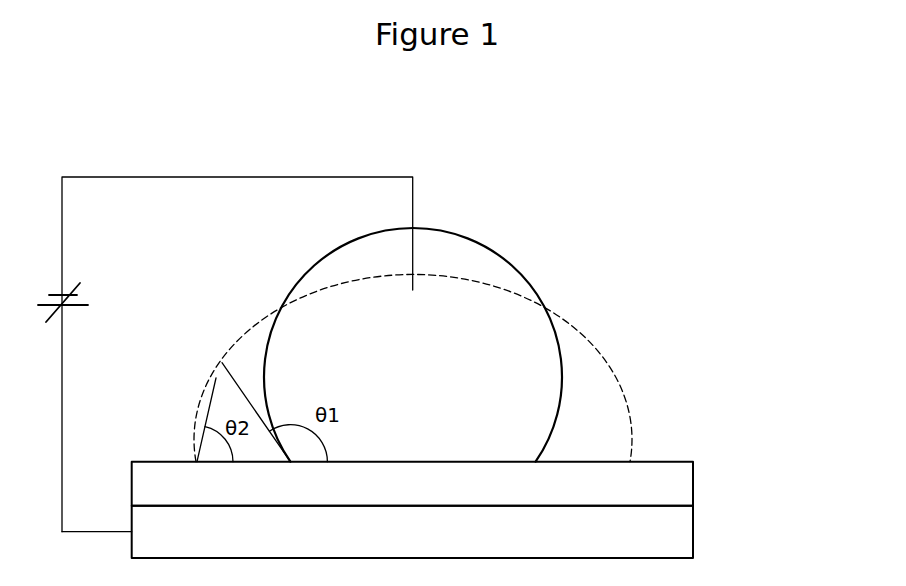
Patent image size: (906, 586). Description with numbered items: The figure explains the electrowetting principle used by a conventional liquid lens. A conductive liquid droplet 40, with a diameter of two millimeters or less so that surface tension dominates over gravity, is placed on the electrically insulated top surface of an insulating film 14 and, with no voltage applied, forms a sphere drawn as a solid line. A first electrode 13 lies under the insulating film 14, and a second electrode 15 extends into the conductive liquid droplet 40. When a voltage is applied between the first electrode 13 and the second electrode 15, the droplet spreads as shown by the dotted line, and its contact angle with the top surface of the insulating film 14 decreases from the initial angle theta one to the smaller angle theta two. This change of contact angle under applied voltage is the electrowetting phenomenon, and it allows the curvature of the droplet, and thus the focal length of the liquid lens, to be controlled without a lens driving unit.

The second electrode 15 is at (413, 205).
The conductive liquid droplet 40 is at (508, 287).
The insulating film 14 is at (673, 483).
The first electrode 13 is at (677, 533).